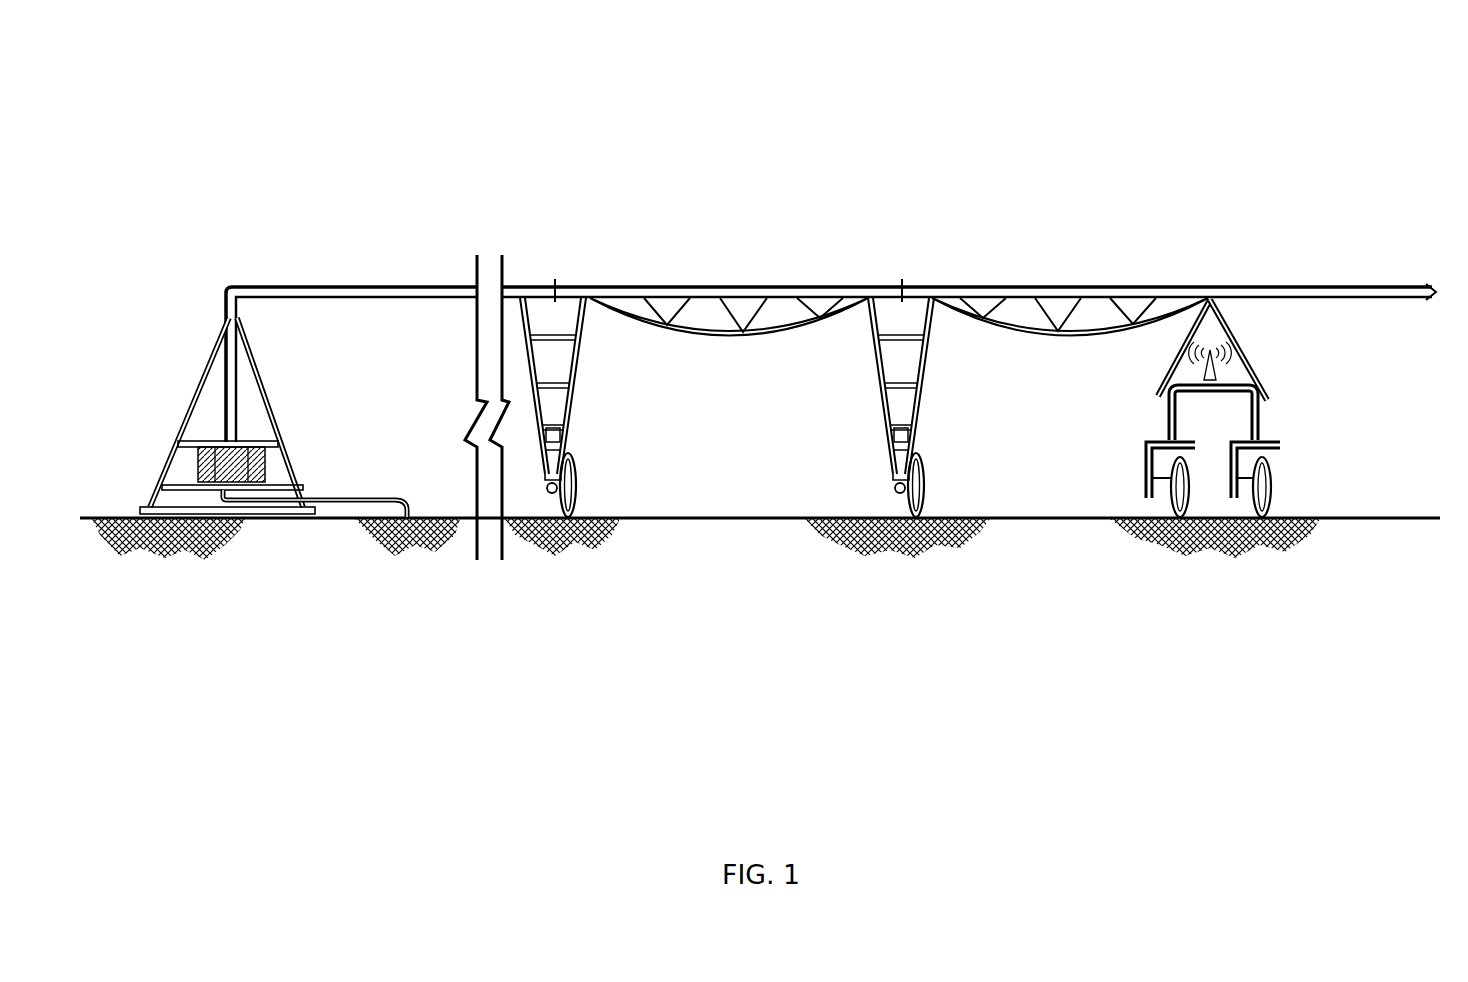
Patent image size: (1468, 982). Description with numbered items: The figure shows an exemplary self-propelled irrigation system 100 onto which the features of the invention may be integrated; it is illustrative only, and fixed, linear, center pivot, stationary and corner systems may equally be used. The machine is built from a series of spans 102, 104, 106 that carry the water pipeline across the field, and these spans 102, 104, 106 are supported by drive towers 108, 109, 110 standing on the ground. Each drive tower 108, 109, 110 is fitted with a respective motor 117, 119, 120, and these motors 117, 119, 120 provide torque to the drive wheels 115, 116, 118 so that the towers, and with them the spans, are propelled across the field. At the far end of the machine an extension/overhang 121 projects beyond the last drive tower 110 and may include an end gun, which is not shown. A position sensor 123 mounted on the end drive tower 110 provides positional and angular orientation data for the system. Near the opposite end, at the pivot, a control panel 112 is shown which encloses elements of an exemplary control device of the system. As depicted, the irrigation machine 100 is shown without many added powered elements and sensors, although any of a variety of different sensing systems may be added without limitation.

The self-propelled irrigation system 100 is at (836, 108).
The span 102 is at (293, 287).
The span 104 is at (692, 287).
The span 106 is at (1048, 287).
The drive tower 108 is at (577, 372).
The drive tower 109 is at (920, 340).
The drive tower 110 is at (1262, 378).
The control panel 112 is at (210, 438).
The drive wheel 115 is at (577, 487).
The drive wheel 116 is at (923, 488).
The motor 117 is at (560, 430).
The drive wheel 118 is at (1188, 490).
The motor 119 is at (917, 430).
The motor 120 is at (1233, 443).
The extension/overhang 121 is at (1410, 286).
The position sensor 123 is at (1227, 352).